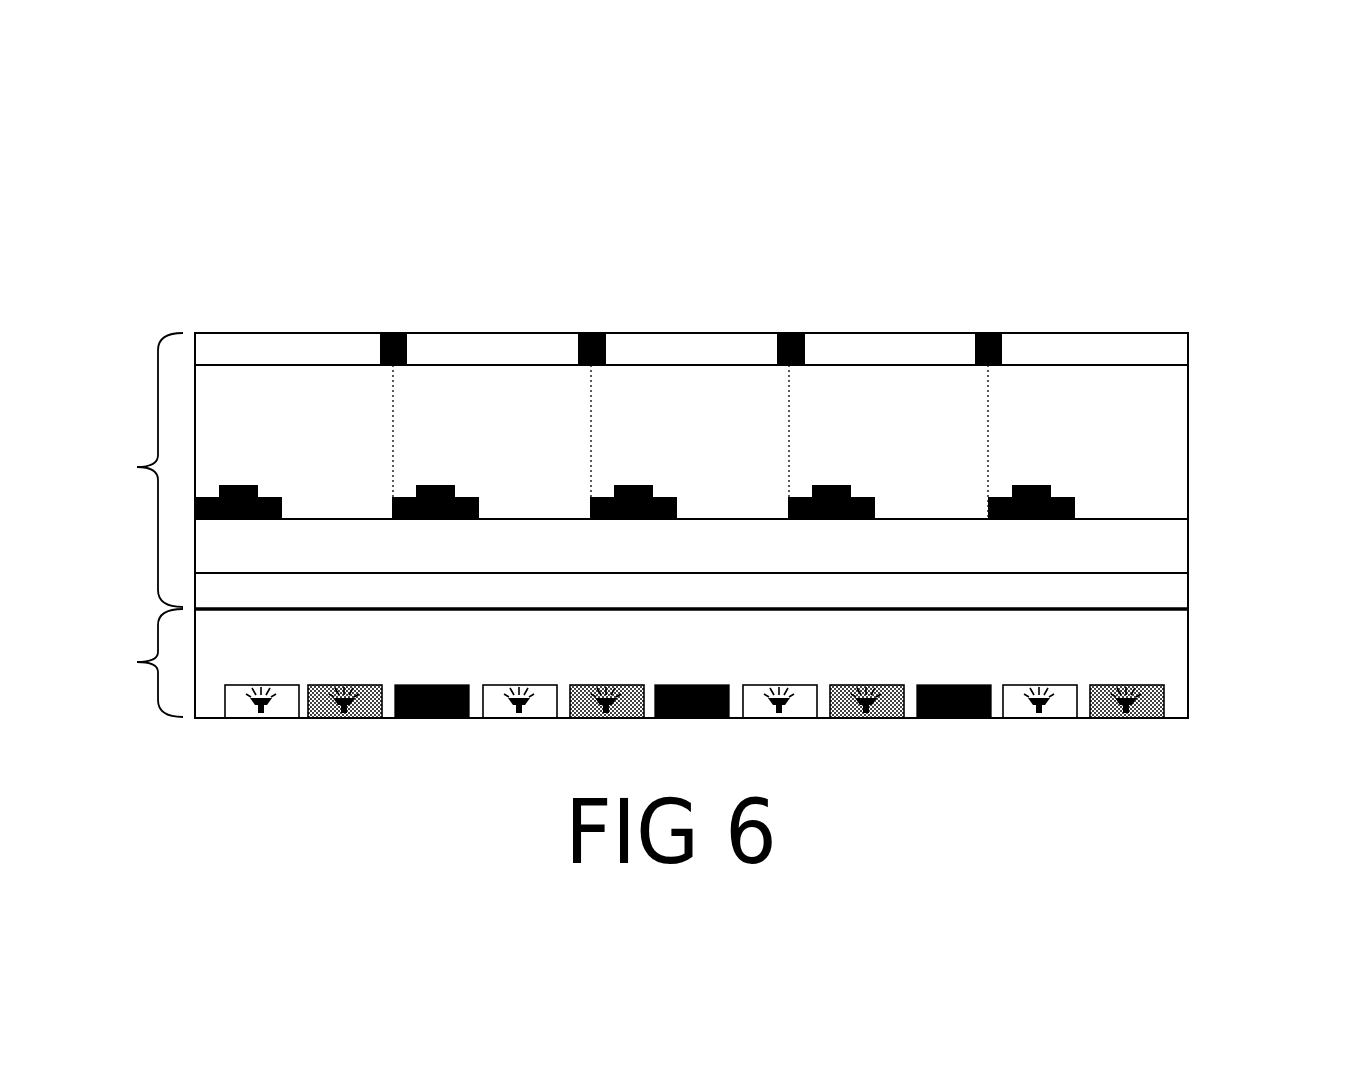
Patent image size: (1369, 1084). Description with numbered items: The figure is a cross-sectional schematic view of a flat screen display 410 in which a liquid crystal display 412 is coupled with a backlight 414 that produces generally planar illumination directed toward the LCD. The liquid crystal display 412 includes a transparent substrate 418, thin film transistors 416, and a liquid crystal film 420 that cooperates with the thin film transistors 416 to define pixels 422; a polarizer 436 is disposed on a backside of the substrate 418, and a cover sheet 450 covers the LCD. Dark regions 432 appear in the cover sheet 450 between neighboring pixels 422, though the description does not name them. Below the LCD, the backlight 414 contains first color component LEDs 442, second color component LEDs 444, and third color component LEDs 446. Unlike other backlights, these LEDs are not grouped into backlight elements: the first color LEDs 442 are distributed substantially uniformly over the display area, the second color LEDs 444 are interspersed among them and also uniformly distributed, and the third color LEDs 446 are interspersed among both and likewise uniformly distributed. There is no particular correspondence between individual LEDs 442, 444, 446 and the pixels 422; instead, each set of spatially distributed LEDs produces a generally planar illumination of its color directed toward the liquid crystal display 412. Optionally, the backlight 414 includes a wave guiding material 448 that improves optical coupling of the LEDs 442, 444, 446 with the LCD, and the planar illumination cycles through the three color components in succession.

The flat screen display 410 is at (1256, 287).
The liquid crystal display 412 is at (122, 470).
The backlight 414 is at (122, 663).
The thin film transistors 416 is at (272, 496).
The transparent substrate 418 is at (1168, 548).
The liquid crystal film 420 is at (1180, 460).
The pixels 422 is at (312, 430).
The black matrix 432 is at (393, 333).
The polarizer 436 is at (1172, 590).
The first color component LEDs 442 is at (258, 685).
The second color component LEDs 444 is at (344, 685).
The third color component LEDs 446 is at (428, 685).
The wave guiding material 448 is at (1180, 665).
The cover sheet 450 is at (1178, 350).